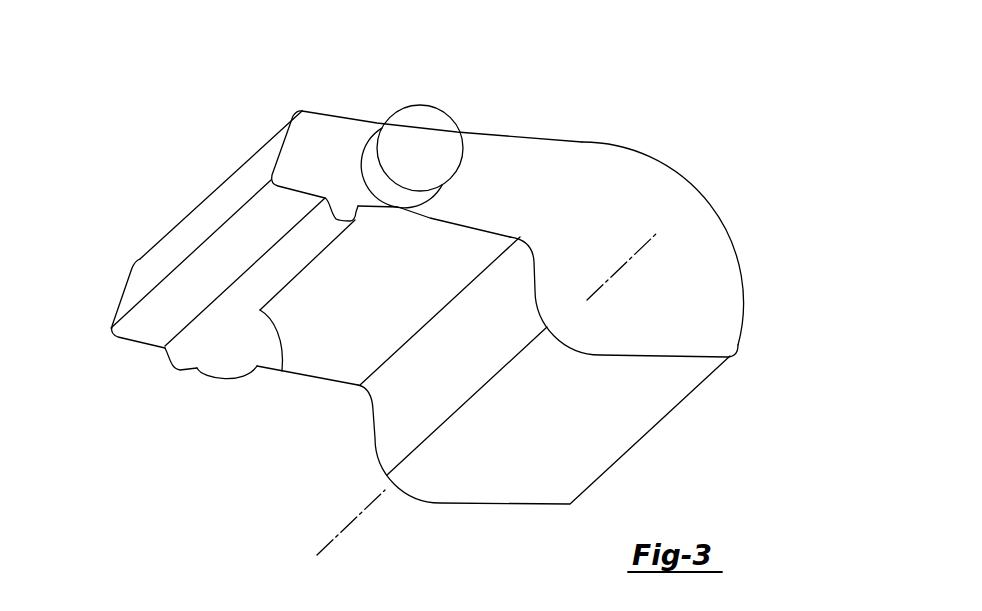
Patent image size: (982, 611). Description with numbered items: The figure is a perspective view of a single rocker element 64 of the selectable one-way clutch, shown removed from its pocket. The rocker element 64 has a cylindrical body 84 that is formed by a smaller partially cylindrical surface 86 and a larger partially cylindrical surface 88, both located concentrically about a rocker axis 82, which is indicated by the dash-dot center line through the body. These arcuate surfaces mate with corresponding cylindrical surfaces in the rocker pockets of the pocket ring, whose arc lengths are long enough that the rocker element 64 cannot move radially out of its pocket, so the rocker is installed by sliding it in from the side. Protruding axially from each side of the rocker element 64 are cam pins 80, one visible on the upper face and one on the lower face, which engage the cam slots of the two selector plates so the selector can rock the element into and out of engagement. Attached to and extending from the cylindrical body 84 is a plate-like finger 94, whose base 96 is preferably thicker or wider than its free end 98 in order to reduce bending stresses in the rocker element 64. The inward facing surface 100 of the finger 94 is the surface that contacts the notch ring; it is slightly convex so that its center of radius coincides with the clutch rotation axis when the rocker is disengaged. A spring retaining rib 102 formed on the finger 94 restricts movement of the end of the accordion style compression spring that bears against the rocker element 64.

The rocker element 64 is at (694, 95).
The cam pins 80 is at (407, 106).
The rocker axis 82 is at (348, 522).
The cylindrical body 84 is at (670, 322).
The smaller partially cylindrical surface 86 is at (457, 433).
The larger partially cylindrical surface 88 is at (712, 207).
The finger 94 is at (257, 148).
The base 96 is at (550, 173).
The free end 98 is at (188, 235).
The inward facing surface 100 is at (516, 127).
The spring retaining rib 102 is at (282, 371).